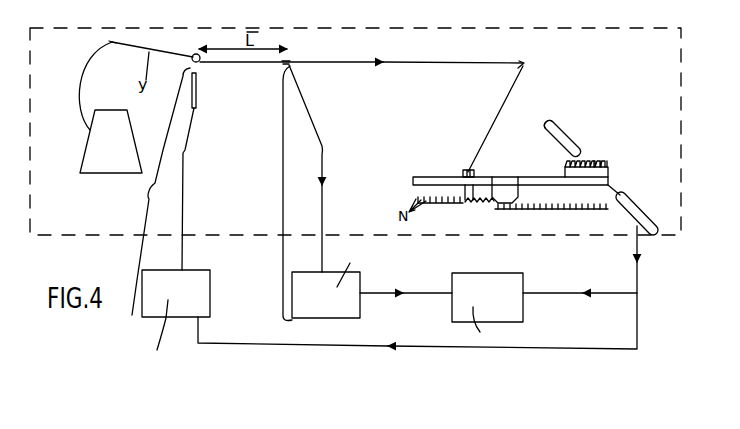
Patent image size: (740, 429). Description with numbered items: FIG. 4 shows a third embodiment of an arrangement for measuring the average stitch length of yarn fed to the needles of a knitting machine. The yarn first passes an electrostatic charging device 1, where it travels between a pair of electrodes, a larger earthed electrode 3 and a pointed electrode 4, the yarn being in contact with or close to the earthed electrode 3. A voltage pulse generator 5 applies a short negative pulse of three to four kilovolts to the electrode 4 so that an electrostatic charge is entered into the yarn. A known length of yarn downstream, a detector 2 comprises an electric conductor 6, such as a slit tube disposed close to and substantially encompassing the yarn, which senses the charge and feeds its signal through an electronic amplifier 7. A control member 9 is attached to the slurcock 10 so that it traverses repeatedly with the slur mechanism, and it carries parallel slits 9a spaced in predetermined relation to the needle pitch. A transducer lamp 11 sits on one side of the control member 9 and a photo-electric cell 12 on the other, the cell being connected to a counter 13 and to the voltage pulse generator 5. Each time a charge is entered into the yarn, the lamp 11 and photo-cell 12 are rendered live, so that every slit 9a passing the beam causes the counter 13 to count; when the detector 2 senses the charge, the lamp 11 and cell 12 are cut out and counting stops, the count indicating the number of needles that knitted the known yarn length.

The electrostatic charging device 1 is at (161, 191).
The detector 2 is at (283, 208).
The earthed electrode 3 is at (202, 53).
The electrode 4 is at (197, 86).
The voltage pulse generator 5 is at (210, 289).
The electric conductor 6 is at (291, 63).
The electronic amplifier 7 is at (350, 284).
The control member 9 is at (573, 172).
The slits 9a is at (607, 162).
The slurcock 10 is at (510, 193).
The transducer lamp 11 is at (546, 127).
The photo-electric cell 12 is at (637, 208).
The counter 13 is at (505, 283).